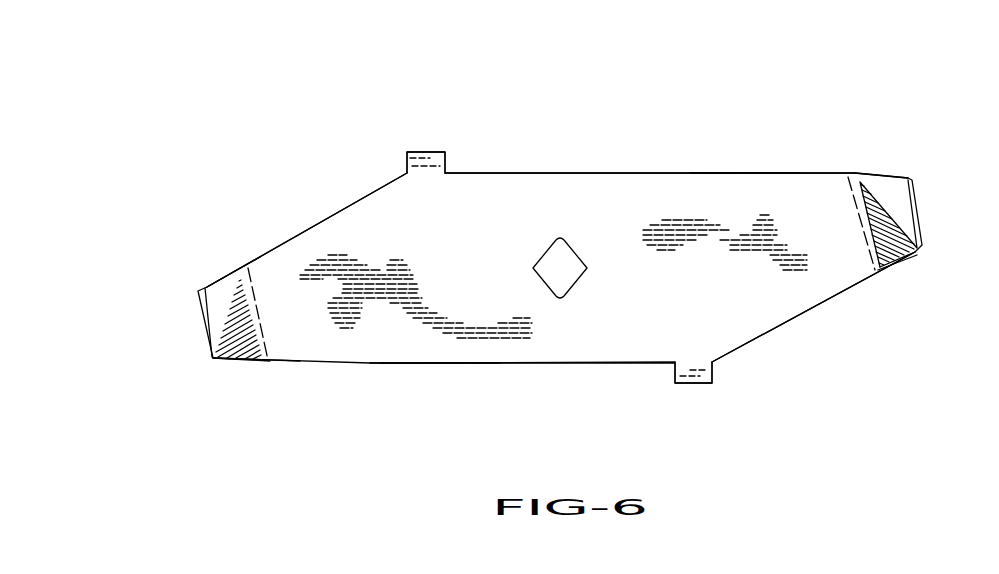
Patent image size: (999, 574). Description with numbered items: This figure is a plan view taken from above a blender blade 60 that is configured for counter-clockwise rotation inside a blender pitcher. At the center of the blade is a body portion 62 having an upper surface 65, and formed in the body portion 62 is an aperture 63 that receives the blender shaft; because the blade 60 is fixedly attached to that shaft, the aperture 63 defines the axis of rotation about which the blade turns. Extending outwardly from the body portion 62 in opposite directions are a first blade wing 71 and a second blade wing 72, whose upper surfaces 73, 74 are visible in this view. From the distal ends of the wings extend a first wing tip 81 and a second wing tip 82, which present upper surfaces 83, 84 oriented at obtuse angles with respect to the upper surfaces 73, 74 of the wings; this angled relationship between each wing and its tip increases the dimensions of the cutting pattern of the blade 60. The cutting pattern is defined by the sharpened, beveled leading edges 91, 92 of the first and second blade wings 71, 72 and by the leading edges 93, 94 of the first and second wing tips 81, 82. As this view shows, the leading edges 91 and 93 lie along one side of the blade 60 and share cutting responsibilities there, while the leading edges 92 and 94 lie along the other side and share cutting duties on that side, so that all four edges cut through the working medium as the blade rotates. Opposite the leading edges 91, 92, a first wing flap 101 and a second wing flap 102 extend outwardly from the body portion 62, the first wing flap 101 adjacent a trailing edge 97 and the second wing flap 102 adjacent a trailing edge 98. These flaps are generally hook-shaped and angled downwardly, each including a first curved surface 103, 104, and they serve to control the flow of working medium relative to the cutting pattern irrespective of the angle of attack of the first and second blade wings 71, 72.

The blender blade 60 is at (233, 158).
The body portion 62 is at (543, 202).
The aperture 63 is at (560, 268).
The upper surface 65 is at (552, 347).
The first blade wing 71 is at (752, 183).
The second blade wing 72 is at (388, 318).
The upper surface 73 is at (823, 190).
The upper surface 74 is at (297, 335).
The first wing tip 81 is at (898, 257).
The second wing tip 82 is at (220, 277).
The upper surface 83 is at (900, 220).
The upper surface 84 is at (222, 318).
The leading edge 91 is at (718, 173).
The leading edge 92 is at (432, 363).
The leading edge 93 is at (873, 176).
The leading edge 94 is at (240, 362).
The trailing edge 97 is at (777, 330).
The trailing edge 98 is at (313, 222).
The first wing flap 101 is at (715, 380).
The second wing flap 102 is at (432, 150).
The first curved surface 103 is at (695, 383).
The first curved surface 104 is at (407, 165).